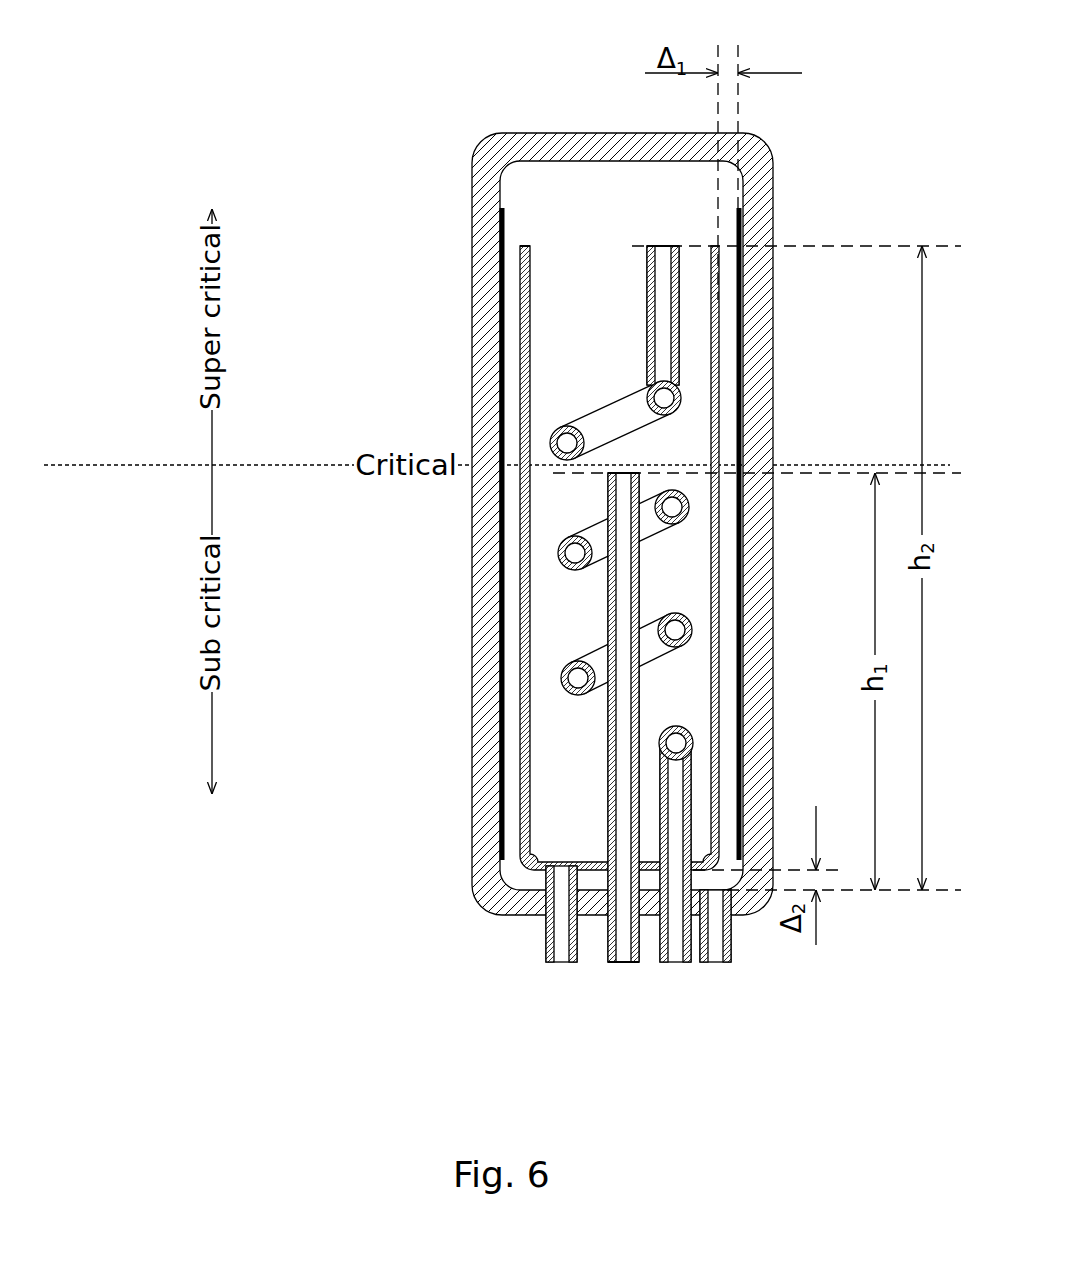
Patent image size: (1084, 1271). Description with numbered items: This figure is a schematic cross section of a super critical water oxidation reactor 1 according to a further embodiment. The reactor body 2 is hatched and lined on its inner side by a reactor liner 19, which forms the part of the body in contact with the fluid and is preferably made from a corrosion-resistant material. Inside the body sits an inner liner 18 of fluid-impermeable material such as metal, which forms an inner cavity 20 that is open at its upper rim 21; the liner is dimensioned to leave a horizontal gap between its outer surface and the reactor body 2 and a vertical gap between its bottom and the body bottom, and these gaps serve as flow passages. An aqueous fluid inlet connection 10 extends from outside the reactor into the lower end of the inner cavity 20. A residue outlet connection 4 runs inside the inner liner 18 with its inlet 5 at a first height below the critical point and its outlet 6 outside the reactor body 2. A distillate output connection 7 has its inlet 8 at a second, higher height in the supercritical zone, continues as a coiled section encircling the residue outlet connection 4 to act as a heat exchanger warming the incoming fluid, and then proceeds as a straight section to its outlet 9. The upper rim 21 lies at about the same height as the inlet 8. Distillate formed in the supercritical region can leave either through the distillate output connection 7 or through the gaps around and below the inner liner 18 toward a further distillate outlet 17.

The super critical water oxidation reactor 1 is at (460, 122).
The reactor body 2 is at (742, 148).
The residue outlet connection 4 is at (606, 618).
The inlet of the residue outlet connection 5 is at (630, 471).
The outlet of the residue outlet connection 6 is at (630, 964).
The distillate output connection 7 is at (640, 316).
The inlet of the distillate output connection 8 is at (660, 244).
The outlet of the distillate output connection 9 is at (682, 967).
The aqueous fluid inlet connection 10 is at (542, 948).
The further distillate outlet 17 is at (745, 948).
The inner liner 18 is at (518, 680).
The reactor liner 19 is at (500, 340).
The inner cavity 20 is at (565, 780).
The upper rim of the inner liner 21 is at (517, 242).